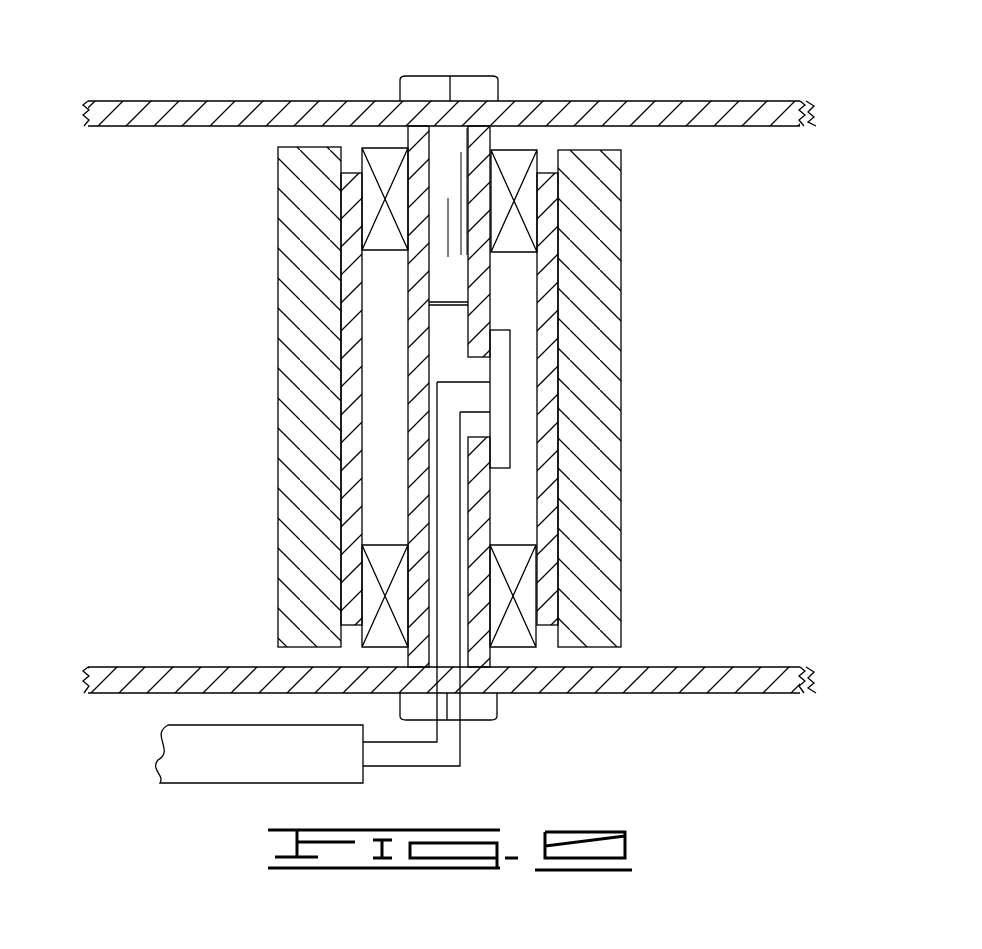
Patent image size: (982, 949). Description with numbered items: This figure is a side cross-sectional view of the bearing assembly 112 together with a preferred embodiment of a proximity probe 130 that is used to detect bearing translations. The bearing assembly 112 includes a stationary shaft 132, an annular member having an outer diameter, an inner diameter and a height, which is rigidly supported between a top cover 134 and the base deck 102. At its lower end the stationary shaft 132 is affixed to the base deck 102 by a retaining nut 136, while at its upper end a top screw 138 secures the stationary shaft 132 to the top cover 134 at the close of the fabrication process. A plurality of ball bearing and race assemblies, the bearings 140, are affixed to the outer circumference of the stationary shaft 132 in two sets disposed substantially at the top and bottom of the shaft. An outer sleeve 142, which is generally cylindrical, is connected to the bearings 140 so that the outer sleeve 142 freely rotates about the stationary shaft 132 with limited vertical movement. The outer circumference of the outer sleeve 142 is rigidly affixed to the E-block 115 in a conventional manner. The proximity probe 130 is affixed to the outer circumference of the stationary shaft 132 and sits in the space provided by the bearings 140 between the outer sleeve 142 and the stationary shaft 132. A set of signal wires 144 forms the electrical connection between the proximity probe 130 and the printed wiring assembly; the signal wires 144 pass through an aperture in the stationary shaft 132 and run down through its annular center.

The base deck 102 is at (707, 697).
The bearing assembly 112 is at (672, 245).
The E-block 115 is at (310, 432).
The proximity probe 130 is at (503, 422).
The stationary shaft 132 is at (412, 313).
The top cover 134 is at (185, 101).
The retaining nut 136 is at (482, 708).
The top screw 138 is at (462, 76).
The bearings 140 is at (382, 191).
The outer sleeve 142 is at (350, 362).
The signal wires 144 is at (433, 767).